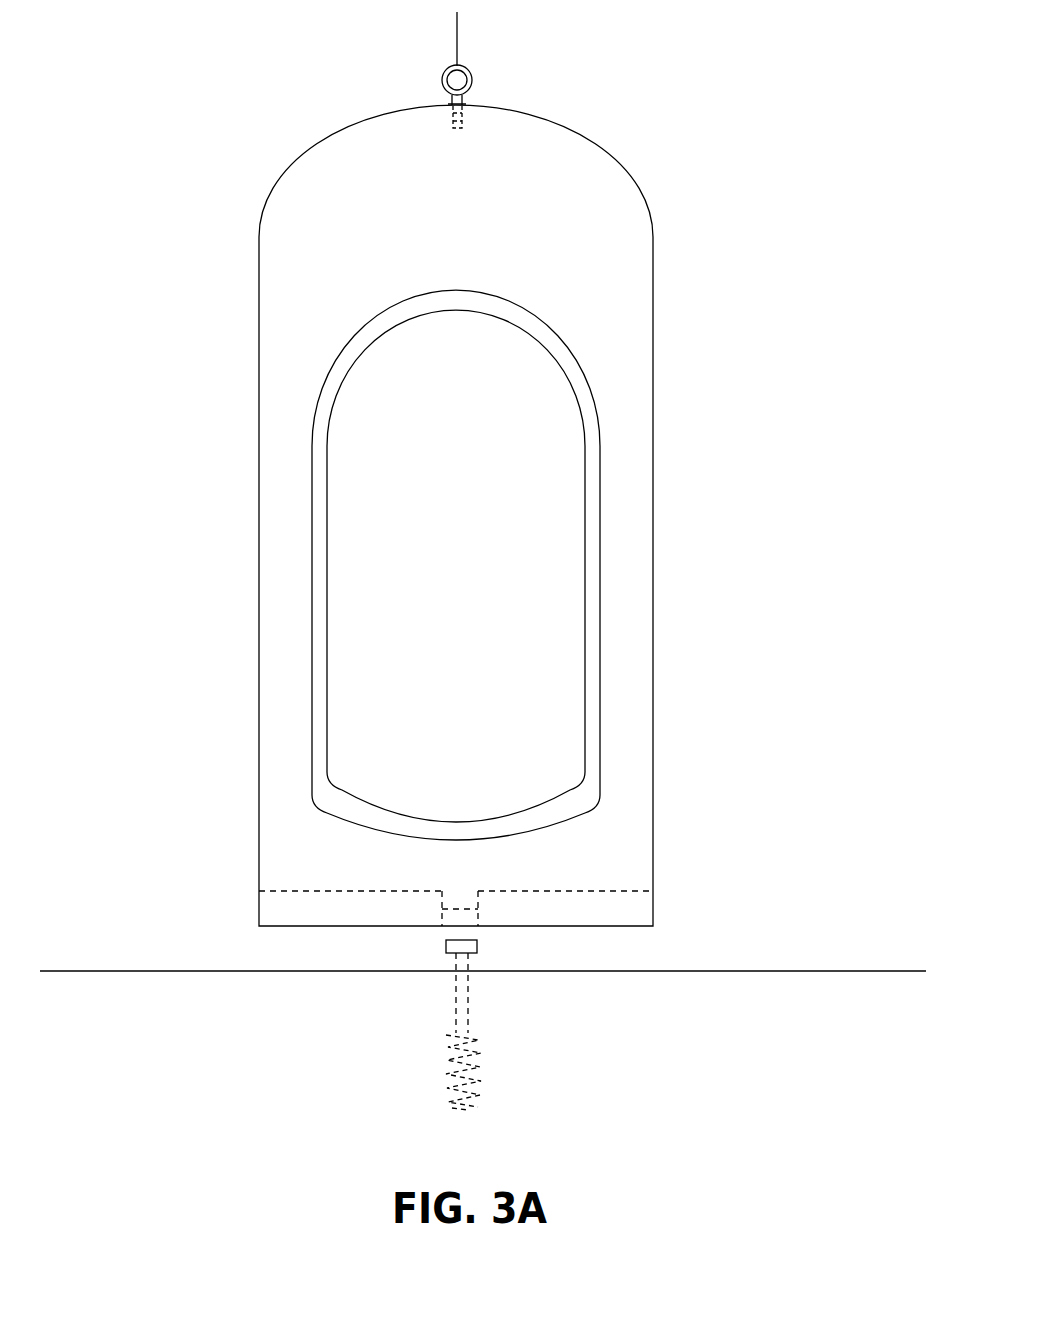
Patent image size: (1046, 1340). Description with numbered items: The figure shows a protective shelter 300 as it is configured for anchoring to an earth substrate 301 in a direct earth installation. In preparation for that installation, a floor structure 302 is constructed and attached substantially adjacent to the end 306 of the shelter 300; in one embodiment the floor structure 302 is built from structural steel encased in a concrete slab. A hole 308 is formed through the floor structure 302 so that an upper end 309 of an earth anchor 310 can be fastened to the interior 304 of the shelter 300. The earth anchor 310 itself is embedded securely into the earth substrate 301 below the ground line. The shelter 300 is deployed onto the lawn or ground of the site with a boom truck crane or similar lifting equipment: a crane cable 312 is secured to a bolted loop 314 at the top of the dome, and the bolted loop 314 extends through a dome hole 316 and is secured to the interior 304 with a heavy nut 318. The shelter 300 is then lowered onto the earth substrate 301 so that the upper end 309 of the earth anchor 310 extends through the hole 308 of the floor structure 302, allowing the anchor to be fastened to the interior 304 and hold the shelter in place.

The protective shelter 300 is at (336, 86).
The earth substrate 301 is at (757, 971).
The floor structure 302 is at (280, 905).
The interior 304 is at (371, 570).
The end 306 is at (653, 921).
The hole 308 is at (458, 892).
The upper end 309 is at (468, 960).
The earth anchor 310 is at (432, 1012).
The crane cable 312 is at (457, 42).
The bolted loop 314 is at (472, 80).
The dome hole 316 is at (452, 100).
The heavy nut 318 is at (466, 109).